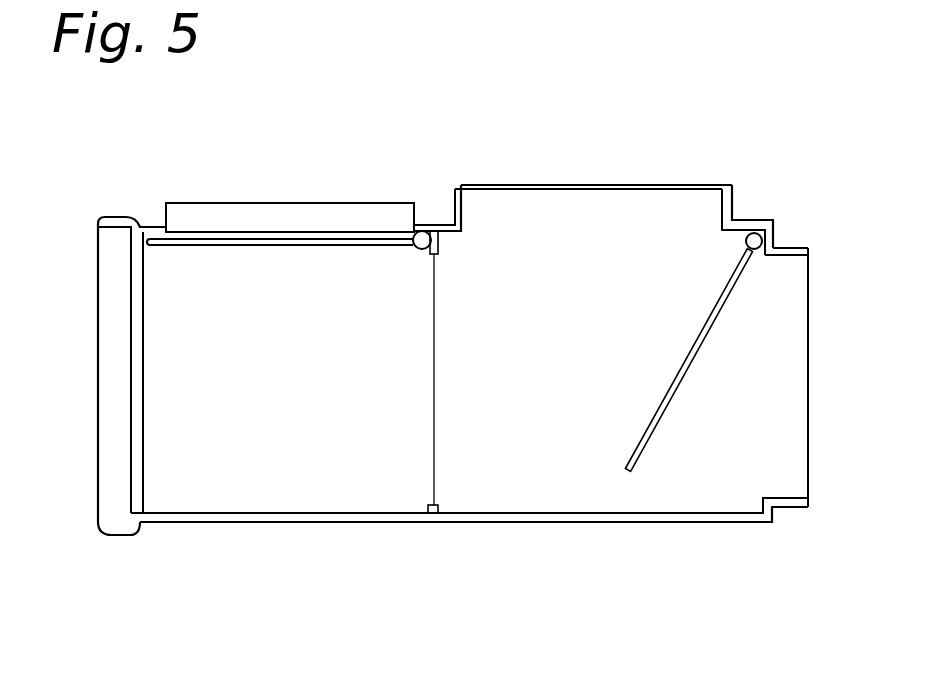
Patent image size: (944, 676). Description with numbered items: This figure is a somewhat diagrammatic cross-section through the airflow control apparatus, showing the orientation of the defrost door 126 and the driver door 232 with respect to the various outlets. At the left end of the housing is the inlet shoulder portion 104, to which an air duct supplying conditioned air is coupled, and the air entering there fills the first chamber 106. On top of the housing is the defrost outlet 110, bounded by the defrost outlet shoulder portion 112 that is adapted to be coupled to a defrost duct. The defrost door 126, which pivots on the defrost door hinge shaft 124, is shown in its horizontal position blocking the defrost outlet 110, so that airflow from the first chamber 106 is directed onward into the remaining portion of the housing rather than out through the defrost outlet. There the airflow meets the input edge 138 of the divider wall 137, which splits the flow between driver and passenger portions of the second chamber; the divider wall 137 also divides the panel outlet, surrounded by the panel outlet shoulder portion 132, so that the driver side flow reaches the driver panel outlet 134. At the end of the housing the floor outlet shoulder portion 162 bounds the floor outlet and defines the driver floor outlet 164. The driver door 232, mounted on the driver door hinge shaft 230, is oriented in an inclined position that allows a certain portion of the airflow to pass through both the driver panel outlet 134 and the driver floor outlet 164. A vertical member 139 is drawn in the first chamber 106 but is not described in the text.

The inlet shoulder portion 104 is at (97, 260).
The first chamber 106 is at (318, 524).
The defrost outlet 110 is at (220, 195).
The defrost outlet shoulder portion 112 is at (373, 202).
The defrost door hinge shaft 124 is at (417, 250).
The defrost door 126 is at (292, 246).
The panel outlet shoulder portion 132 is at (733, 192).
The driver panel outlet 134 is at (664, 309).
The divider wall 137 is at (497, 457).
The input edge 138 is at (508, 183).
The rod 139 is at (433, 470).
The floor outlet shoulder portion 162 is at (787, 248).
The driver floor outlet 164 is at (820, 317).
The driver door hinge shaft 230 is at (743, 247).
The driver door 232 is at (683, 384).